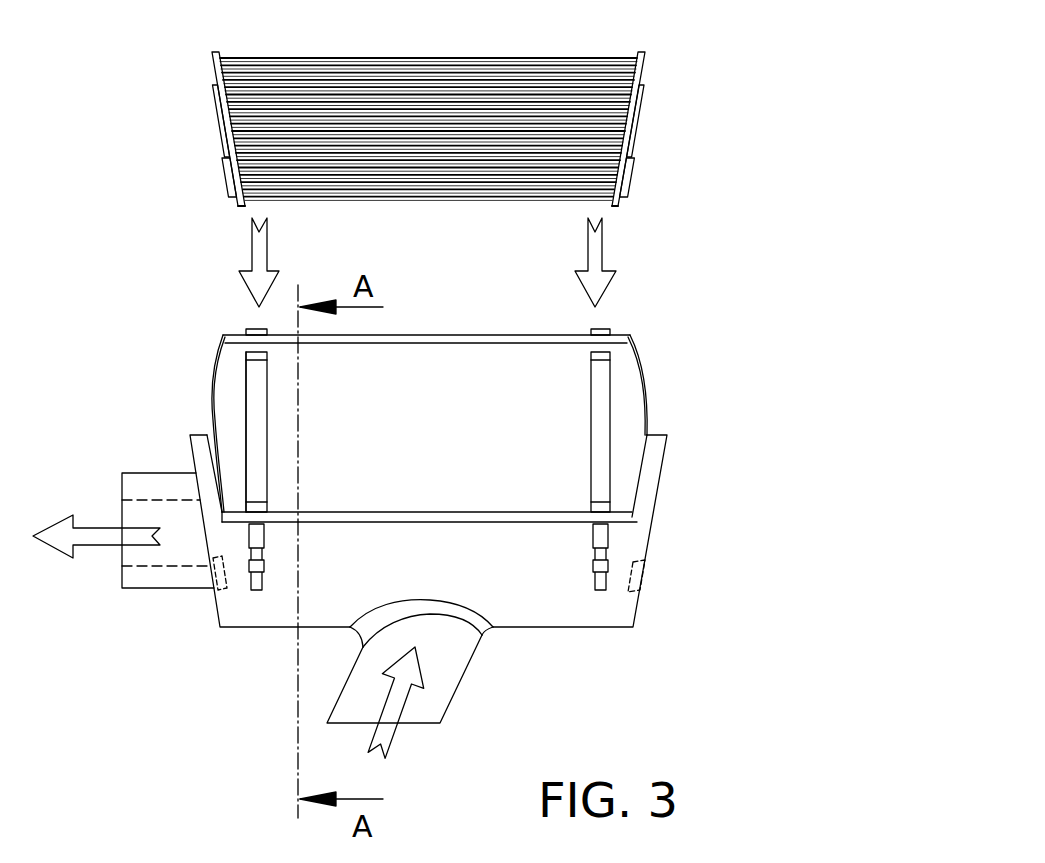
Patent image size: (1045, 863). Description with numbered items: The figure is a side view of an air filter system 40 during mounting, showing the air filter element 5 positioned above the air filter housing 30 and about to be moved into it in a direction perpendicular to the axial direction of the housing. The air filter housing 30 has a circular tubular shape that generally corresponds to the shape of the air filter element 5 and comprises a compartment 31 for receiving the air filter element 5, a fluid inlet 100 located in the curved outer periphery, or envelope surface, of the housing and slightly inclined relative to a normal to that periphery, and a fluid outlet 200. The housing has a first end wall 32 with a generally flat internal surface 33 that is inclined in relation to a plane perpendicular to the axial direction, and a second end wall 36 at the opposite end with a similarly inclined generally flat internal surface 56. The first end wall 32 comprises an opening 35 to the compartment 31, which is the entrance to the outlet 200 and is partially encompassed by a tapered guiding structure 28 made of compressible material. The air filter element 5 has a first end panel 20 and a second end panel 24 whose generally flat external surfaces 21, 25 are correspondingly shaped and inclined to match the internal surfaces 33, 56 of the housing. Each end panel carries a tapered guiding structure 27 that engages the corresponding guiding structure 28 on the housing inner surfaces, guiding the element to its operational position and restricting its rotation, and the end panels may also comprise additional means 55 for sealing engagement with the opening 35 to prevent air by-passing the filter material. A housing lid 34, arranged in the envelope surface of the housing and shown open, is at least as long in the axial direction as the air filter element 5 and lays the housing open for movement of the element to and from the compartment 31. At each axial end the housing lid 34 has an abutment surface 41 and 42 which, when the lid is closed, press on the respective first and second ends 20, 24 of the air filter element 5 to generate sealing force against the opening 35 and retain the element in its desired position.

The air filter element 5 is at (473, 104).
The first end panel 20 is at (213, 72).
The generally flat external surface 21 is at (235, 208).
The second end panel 24 is at (645, 70).
The generally flat external surface 25 is at (620, 208).
The guiding structure 27 is at (222, 178).
The additional means for sealing engagement 55 is at (216, 128).
The air filter system 40 is at (459, 441).
The housing lid 34 is at (640, 365).
The generally flat internal surface 33 is at (254, 396).
The abutment surface 41 is at (600, 407).
The abutment surface 42 is at (233, 480).
The generally flat internal surface 56 is at (625, 447).
The compartment 31 is at (473, 503).
The air filter housing 30 is at (422, 507).
The first end wall 32 is at (190, 452).
The second end wall 36 is at (660, 472).
The guiding structure 28 is at (205, 573).
The opening 35 is at (182, 540).
The fluid inlet 100 is at (392, 735).
The fluid outlet 200 is at (93, 545).